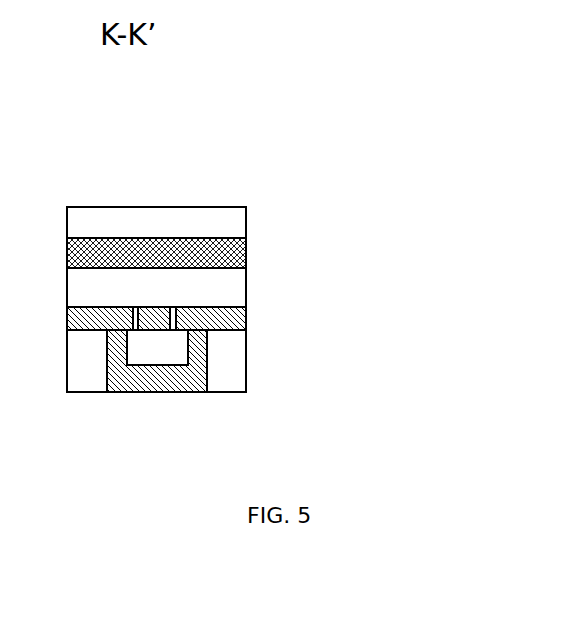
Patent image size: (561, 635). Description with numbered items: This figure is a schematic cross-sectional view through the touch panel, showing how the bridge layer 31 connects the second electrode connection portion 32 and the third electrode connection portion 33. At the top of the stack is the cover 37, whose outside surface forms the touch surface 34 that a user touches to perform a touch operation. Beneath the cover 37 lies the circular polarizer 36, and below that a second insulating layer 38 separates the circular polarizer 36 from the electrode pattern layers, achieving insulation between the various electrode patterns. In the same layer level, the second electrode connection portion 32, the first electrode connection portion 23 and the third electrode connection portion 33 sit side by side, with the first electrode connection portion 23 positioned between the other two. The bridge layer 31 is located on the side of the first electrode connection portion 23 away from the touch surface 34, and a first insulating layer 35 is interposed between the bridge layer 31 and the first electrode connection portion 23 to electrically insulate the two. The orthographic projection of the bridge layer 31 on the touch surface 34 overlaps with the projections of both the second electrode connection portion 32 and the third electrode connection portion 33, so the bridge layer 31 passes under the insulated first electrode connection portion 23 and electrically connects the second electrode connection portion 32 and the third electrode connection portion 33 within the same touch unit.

The first electrode connection portion 23 is at (160, 315).
The bridge layer 31 is at (205, 380).
The second electrode connection portion 32 is at (113, 317).
The third electrode connection portion 33 is at (205, 317).
The touch surface 34 is at (215, 207).
The first insulating layer 35 is at (160, 353).
The circular polarizer 36 is at (228, 260).
The cover 37 is at (228, 227).
The second insulating layer 38 is at (228, 298).